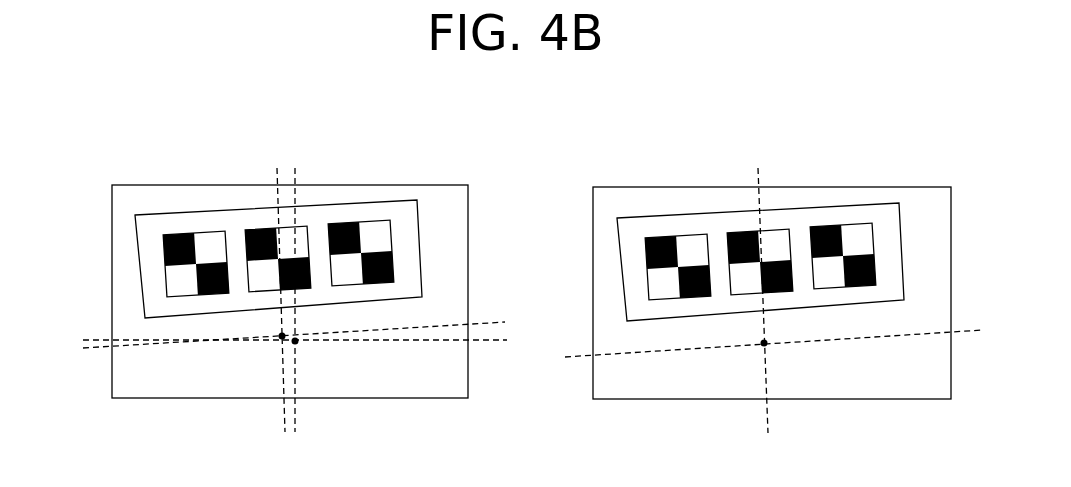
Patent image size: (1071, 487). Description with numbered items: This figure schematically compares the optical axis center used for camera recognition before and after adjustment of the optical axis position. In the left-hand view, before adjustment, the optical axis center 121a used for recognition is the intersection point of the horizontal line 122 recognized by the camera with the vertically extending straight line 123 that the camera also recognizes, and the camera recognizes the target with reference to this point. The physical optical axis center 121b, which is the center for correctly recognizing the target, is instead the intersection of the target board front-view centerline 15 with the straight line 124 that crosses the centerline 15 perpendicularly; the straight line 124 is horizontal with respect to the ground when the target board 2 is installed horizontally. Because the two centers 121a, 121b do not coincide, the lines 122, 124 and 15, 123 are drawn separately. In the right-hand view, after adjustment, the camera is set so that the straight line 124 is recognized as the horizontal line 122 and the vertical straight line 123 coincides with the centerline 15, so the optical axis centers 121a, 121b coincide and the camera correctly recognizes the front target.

The target board 2 is at (398, 207).
The target board front-view centerline 15 is at (276, 170).
The vertically extending straight line 123 is at (296, 170).
The optical axis center used for recognition 121a is at (295, 340).
The physical optical axis center 121b is at (282, 338).
The horizontal line 122 is at (447, 340).
The straight line 124 is at (445, 323).